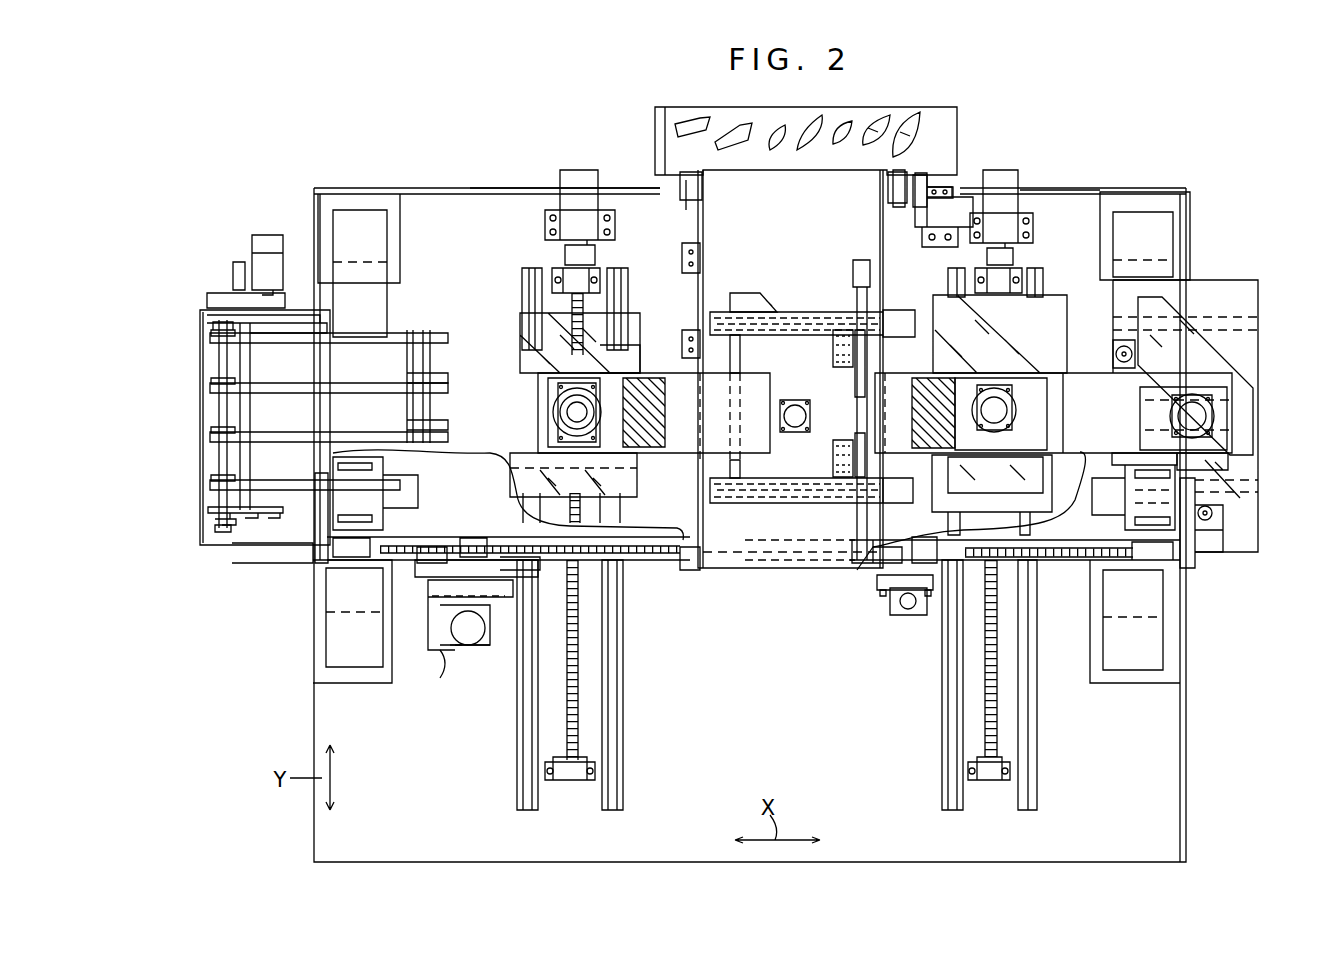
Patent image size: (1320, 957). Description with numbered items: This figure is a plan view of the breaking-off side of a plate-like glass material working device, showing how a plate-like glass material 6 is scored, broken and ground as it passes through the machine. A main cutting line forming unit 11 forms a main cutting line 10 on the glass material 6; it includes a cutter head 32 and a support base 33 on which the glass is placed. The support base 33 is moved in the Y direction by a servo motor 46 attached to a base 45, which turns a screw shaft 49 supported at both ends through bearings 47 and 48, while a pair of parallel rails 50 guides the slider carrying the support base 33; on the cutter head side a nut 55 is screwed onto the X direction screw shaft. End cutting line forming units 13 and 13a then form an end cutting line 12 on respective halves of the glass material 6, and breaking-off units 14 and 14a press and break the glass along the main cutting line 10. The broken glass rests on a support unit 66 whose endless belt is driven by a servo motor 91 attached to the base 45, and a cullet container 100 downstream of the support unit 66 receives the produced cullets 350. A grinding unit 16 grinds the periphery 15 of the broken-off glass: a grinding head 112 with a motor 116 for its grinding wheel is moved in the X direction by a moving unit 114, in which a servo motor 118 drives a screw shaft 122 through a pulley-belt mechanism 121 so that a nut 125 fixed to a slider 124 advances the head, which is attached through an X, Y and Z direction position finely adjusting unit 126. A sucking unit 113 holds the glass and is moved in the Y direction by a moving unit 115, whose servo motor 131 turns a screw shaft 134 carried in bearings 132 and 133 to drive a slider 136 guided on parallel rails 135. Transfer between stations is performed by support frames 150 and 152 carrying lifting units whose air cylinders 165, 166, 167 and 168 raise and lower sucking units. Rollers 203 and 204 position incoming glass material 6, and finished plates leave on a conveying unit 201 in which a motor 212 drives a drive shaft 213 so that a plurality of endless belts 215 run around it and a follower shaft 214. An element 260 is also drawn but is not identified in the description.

The plate-like glass material 6 is at (522, 325).
The main cutting line 10 is at (1010, 345).
The main cutting line forming unit 11 is at (933, 642).
The end cutting line 12 is at (738, 300).
The end cutting line forming unit 13 is at (835, 520).
The end cutting line forming unit 13a is at (842, 290).
The breaking-off unit 14 is at (809, 523).
The breaking-off unit 14a is at (864, 240).
The periphery 15 is at (624, 478).
The grinding unit 16 is at (489, 664).
The cutter head 32 is at (907, 615).
The support base 33 is at (1058, 305).
The base 45 is at (1068, 206).
The servo motor 46 is at (1000, 210).
The bearing 47 is at (1010, 280).
The bearing 48 is at (993, 782).
The screw shaft 49 is at (990, 700).
The parallel rails 50 is at (942, 785).
The nut 55 is at (888, 595).
The support unit 66 is at (725, 581).
The servo motor 91 is at (960, 195).
The cullet container 100 is at (660, 162).
The grinding head 112 is at (451, 694).
The sucking unit 113 is at (548, 390).
The moving unit 114 is at (360, 552).
The moving unit 115 is at (531, 154).
The motor 116 is at (474, 620).
The servo motor 118 is at (320, 518).
The pulley-belt mechanism 121 is at (355, 497).
The screw shaft 122 is at (652, 560).
The slider 124 is at (450, 568).
The nut 125 is at (420, 664).
The position finely adjusting unit 126 is at (460, 645).
The servo motor 131 is at (572, 168).
The bearing 132 is at (568, 272).
The bearing 133 is at (572, 778).
The screw shaft 134 is at (580, 698).
The parallel rails 135 is at (517, 800).
The slider 136 is at (628, 356).
The support frame 150 is at (1213, 380).
The support frame 152 is at (548, 438).
The air cylinder 165 is at (1212, 416).
The air cylinder 166 is at (1000, 410).
The air cylinder 167 is at (795, 428).
The air cylinder 168 is at (572, 413).
The plate-like glass material conveying unit 201 is at (194, 499).
The roller 203 is at (1116, 356).
The roller 204 is at (1213, 530).
The motor 212 is at (272, 233).
The drive shaft 213 is at (218, 412).
The follower shaft 214 is at (432, 333).
The endless belts 215 is at (282, 335).
The block 260 is at (1245, 516).
The cullets 350 is at (700, 130).